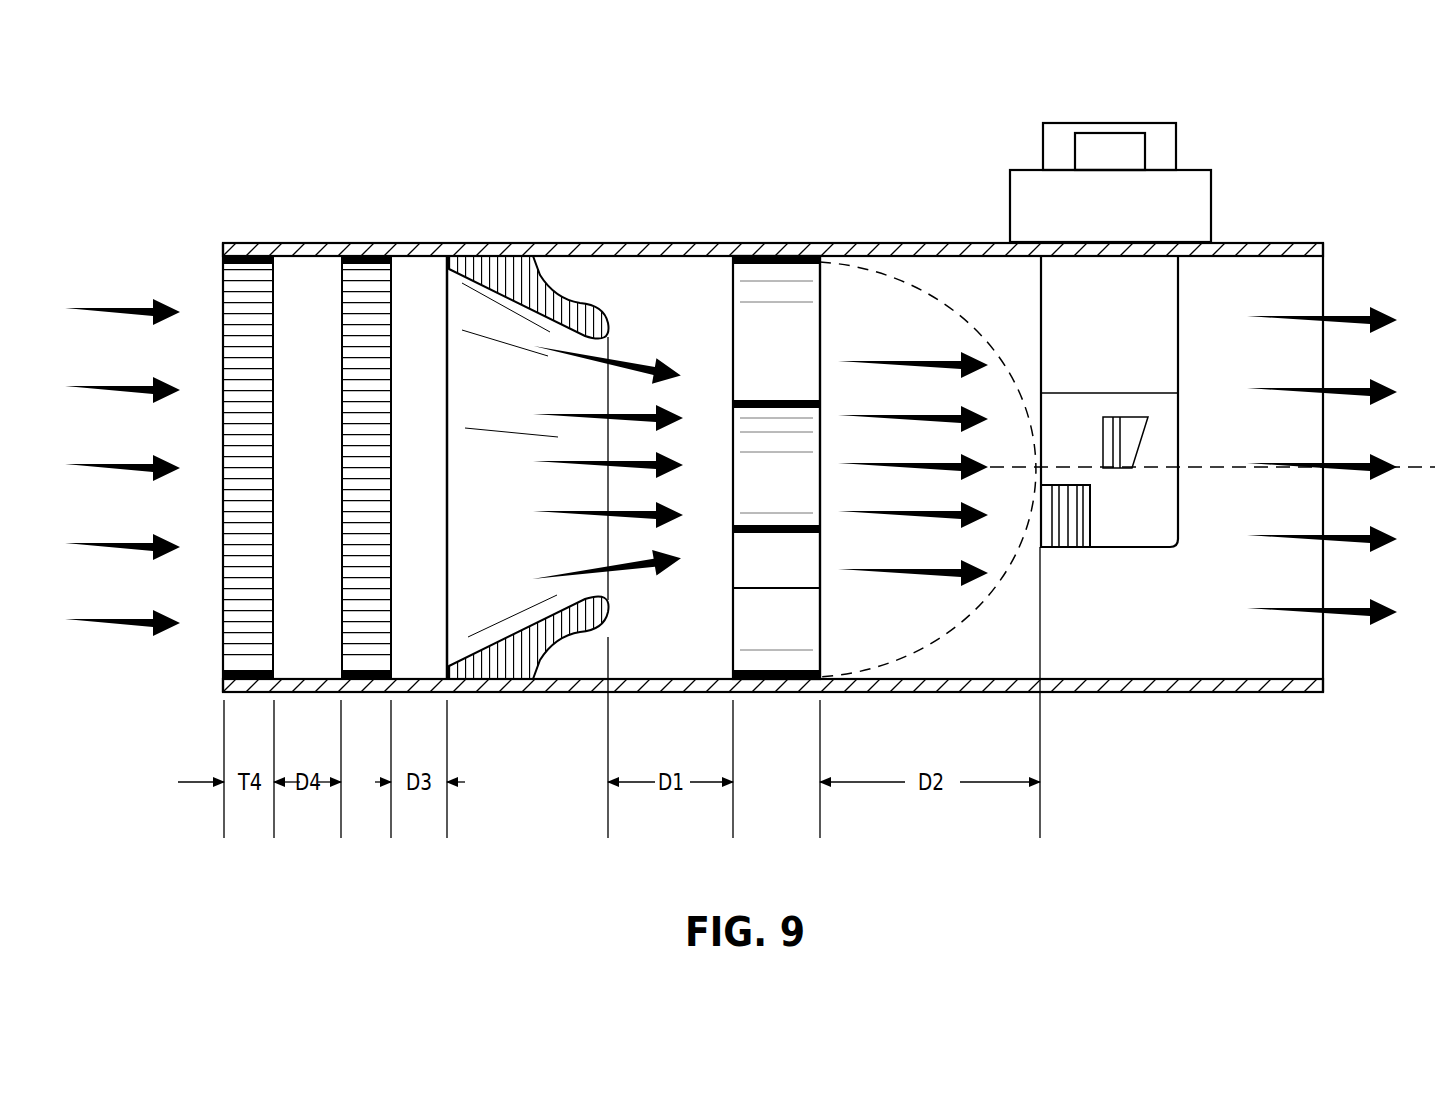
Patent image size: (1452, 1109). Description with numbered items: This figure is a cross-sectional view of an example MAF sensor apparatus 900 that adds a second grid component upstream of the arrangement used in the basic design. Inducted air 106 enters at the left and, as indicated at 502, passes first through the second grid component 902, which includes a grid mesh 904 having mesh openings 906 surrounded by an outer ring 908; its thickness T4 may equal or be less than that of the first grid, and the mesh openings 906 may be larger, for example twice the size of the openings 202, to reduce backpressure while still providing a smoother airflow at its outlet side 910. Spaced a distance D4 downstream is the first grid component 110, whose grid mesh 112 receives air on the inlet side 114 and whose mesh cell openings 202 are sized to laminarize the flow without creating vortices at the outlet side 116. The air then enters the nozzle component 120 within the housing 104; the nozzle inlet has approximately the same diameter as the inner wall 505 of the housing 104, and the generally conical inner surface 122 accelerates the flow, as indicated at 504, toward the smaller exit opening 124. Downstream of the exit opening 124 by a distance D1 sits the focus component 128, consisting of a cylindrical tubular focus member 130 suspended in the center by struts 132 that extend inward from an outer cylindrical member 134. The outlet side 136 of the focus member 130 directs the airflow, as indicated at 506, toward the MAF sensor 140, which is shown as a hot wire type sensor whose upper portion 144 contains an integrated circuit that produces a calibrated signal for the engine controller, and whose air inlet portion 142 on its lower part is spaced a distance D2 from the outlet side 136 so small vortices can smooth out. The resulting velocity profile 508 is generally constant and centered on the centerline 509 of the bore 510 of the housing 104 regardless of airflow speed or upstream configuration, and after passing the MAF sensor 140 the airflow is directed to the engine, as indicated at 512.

The MAF sensor apparatus 900 is at (148, 97).
The ambient inlet air 106 is at (147, 245).
The inducted airflow 502 is at (130, 292).
The mesh openings 906 is at (223, 300).
The grid mesh 904 is at (207, 350).
The outer ring 908 is at (217, 418).
The second grid component 902 is at (223, 262).
The first grid component 110 is at (324, 427).
The inlet side 114 is at (331, 343).
The mesh cell opening 202 is at (343, 362).
The grid mesh 112 is at (330, 438).
The outlet side 910 is at (304, 605).
The outlet side 116 is at (402, 387).
The housing 104 is at (648, 242).
The inner wall 505 is at (585, 256).
The nozzle component 120 is at (580, 640).
The conical inner surface 122 is at (535, 560).
The exit opening 124 is at (617, 392).
The increased-velocity airflow 504 is at (643, 590).
The focus member 130 is at (783, 430).
The outer cylindrical member 134 is at (775, 255).
The strut 132 is at (800, 588).
The focus component 128 is at (822, 300).
The outlet side 136 is at (827, 478).
The focused airflow 506 is at (930, 322).
The velocity profile 508 is at (978, 625).
The centerline 509 is at (1200, 467).
The MAF sensor 140 is at (1146, 326).
The upper portion 144 is at (1211, 170).
The air inlet portion 142 is at (1130, 548).
The bore 510 is at (1152, 620).
The airflow to engine 512 is at (1357, 638).